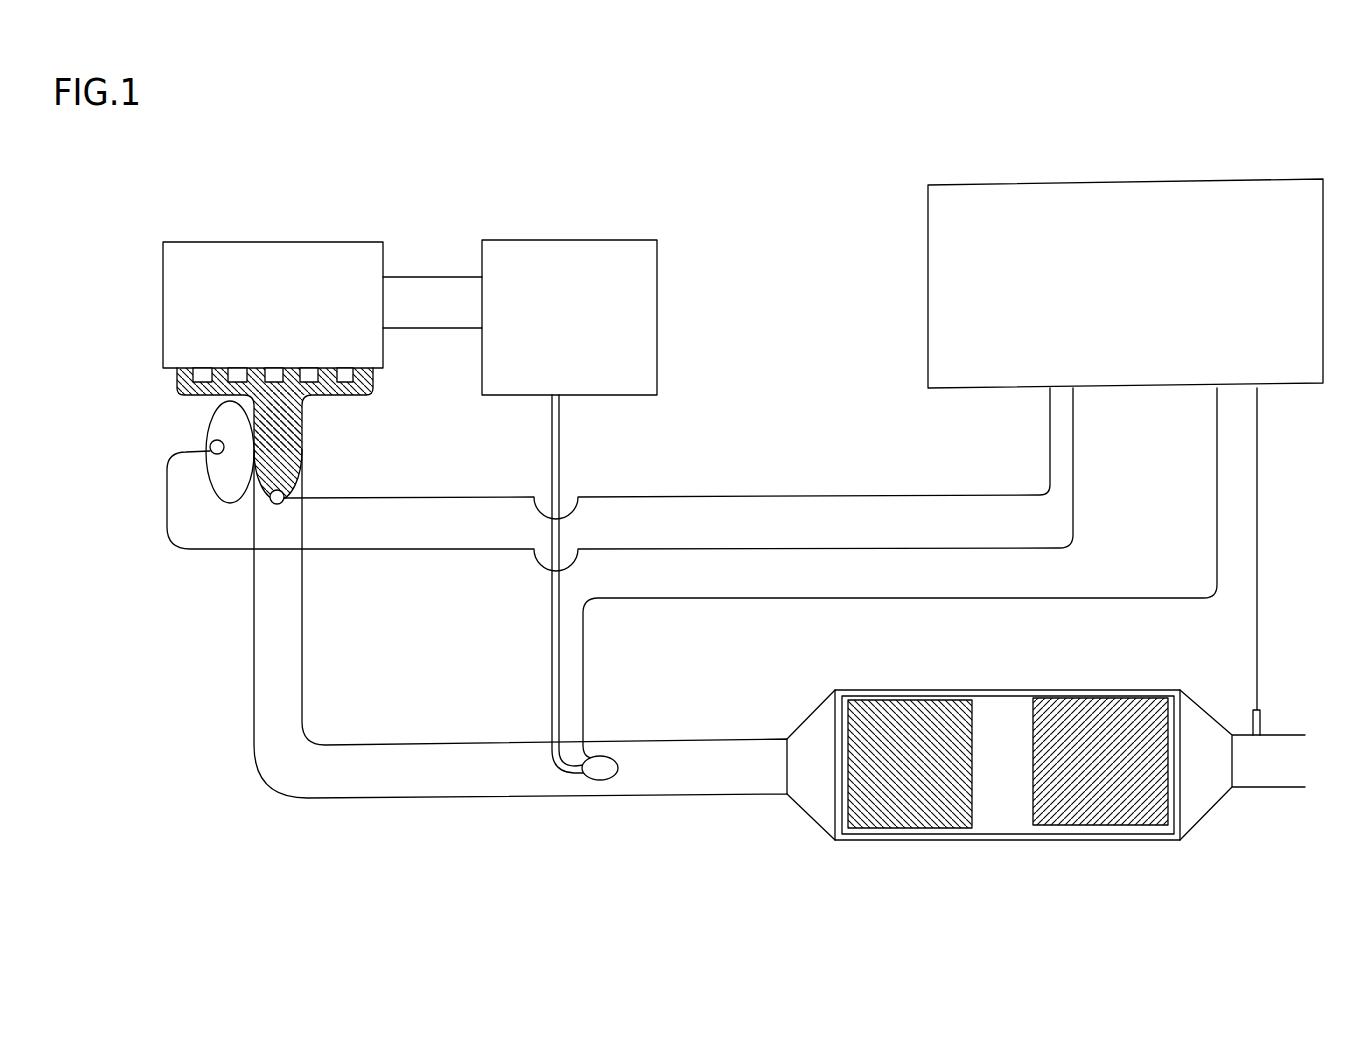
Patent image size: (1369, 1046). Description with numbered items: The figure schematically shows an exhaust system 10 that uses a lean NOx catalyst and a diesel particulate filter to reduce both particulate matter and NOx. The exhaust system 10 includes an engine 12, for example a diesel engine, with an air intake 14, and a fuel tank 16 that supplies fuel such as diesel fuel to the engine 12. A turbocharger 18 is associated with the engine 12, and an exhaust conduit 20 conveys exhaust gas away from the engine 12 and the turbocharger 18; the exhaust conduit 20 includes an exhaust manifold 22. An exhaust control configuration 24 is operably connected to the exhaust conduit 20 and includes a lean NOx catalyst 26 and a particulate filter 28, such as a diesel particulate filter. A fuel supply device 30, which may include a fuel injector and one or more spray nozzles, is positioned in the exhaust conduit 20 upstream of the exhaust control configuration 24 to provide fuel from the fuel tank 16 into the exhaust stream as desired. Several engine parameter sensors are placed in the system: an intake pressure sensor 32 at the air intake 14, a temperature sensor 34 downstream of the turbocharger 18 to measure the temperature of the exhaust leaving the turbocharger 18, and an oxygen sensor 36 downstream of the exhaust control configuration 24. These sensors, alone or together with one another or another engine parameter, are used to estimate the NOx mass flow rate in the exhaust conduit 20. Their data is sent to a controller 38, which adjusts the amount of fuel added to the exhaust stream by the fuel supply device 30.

The exhaust system 10 is at (1177, 135).
The engine 12 is at (270, 241).
The air intake 14 is at (207, 419).
The fuel tank 16 is at (573, 239).
The turbocharger 18 is at (304, 449).
The exhaust conduit 20 is at (252, 690).
The exhaust manifold 22 is at (372, 375).
The exhaust control configuration 24 is at (1020, 684).
The lean NOx catalyst 26 is at (903, 829).
The particulate filter 28 is at (1115, 826).
The fuel supply device 30 is at (609, 757).
The intake pressure sensor 32 is at (209, 446).
The temperature sensor 34 is at (285, 494).
The oxygen sensor 36 is at (1267, 760).
The controller 38 is at (928, 284).